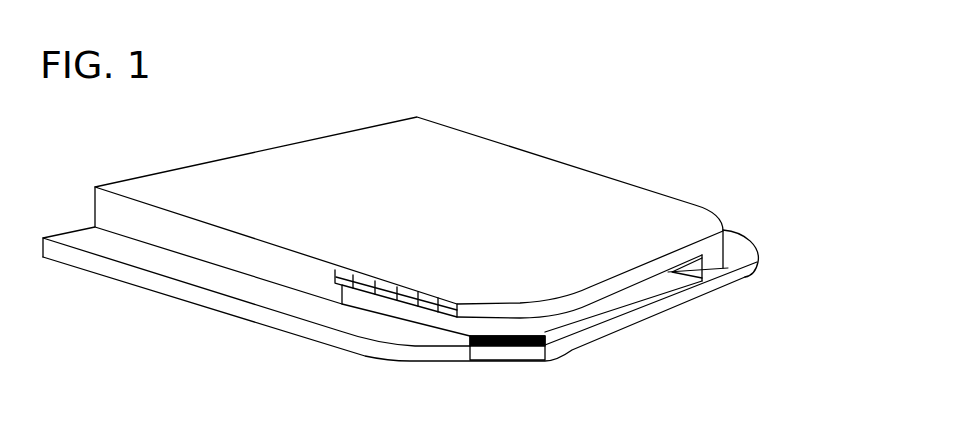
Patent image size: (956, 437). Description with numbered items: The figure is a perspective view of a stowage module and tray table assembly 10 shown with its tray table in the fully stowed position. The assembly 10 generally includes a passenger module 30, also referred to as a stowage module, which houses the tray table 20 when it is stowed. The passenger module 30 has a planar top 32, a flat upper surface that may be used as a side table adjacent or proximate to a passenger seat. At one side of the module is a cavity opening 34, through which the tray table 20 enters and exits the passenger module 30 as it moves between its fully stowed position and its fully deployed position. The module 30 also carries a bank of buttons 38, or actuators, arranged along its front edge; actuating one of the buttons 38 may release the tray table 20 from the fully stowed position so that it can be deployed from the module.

The tray table assembly 10 is at (666, 118).
The tray table 20 is at (668, 273).
The passenger module 30 is at (709, 200).
The planar top 32 is at (483, 160).
The cavity opening 34 is at (753, 262).
The bank of buttons 38 is at (386, 299).